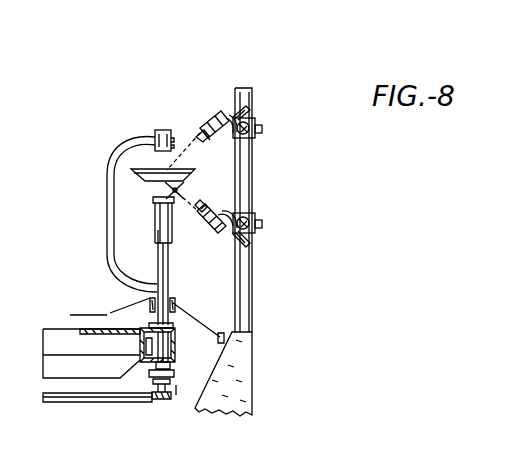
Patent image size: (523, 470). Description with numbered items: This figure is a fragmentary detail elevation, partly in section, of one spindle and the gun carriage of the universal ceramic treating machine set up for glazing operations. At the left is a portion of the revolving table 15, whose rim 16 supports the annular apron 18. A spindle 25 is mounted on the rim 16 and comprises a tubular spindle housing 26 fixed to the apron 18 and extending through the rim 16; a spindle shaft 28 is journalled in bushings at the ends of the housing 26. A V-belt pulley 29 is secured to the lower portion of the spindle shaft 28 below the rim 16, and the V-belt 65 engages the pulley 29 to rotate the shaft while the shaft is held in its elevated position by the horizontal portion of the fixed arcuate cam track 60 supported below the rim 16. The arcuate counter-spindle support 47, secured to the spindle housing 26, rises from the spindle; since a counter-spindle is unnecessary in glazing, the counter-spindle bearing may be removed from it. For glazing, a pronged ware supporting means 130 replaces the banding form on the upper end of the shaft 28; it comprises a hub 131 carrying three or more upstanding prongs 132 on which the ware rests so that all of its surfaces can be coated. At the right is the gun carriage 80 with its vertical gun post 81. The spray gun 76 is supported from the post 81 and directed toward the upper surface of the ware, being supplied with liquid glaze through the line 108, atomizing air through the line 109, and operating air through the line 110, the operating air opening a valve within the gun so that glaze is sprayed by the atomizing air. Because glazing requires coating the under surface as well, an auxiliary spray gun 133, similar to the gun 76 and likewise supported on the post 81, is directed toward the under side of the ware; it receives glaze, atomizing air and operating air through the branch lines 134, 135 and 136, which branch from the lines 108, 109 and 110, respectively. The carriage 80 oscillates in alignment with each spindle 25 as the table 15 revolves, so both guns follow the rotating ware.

The table 15 is at (57, 319).
The rim 16 is at (174, 346).
The annular apron 18 is at (100, 328).
The spindle 25 is at (176, 292).
The spindle housing 26 is at (173, 328).
The spindle shaft 28 is at (164, 238).
The V-belt pulley 29 is at (176, 394).
The counter-spindle support 47 is at (106, 181).
The cam track 60 is at (106, 403).
The V-belt 65 is at (173, 377).
The spray gun 76 is at (197, 133).
The gun carriage 80 is at (260, 361).
The gun post 81 is at (248, 285).
The glaze supply line 108 is at (211, 141).
The atomizing air line 109 is at (197, 125).
The operating air line 110 is at (210, 112).
The pronged ware supporting means 130 is at (158, 198).
The hub 131 is at (157, 204).
The prong 132 is at (160, 189).
The auxiliary spray gun 133 is at (201, 209).
The glaze branch line 134 is at (200, 228).
The atomizing air branch line 135 is at (208, 216).
The operating air branch line 136 is at (216, 244).